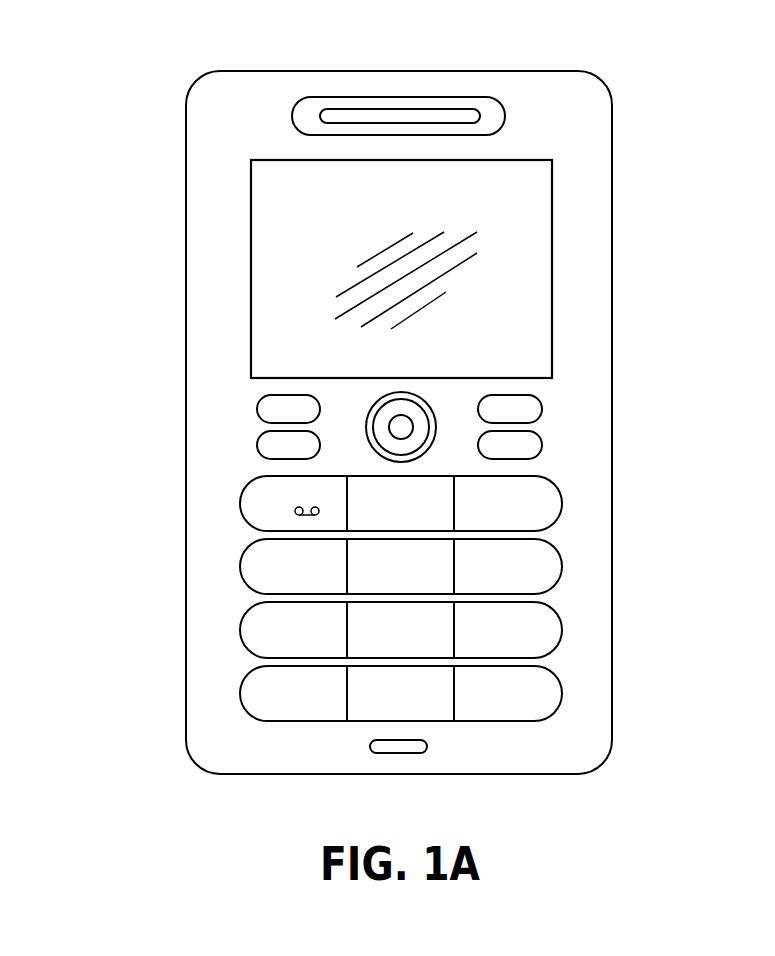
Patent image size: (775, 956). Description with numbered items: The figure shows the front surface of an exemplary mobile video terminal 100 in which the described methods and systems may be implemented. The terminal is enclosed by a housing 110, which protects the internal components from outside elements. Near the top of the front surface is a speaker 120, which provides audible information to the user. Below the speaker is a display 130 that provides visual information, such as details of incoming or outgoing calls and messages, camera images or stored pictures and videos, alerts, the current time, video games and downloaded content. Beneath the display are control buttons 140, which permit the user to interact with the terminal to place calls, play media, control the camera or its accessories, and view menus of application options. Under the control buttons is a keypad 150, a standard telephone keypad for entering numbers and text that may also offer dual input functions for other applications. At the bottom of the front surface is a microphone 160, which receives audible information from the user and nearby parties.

The mobile video terminal 100 is at (331, 31).
The housing 110 is at (186, 118).
The speaker 120 is at (505, 117).
The display 130 is at (552, 268).
The control buttons 140 is at (560, 385).
The keypad 150 is at (577, 702).
The microphone 160 is at (403, 753).